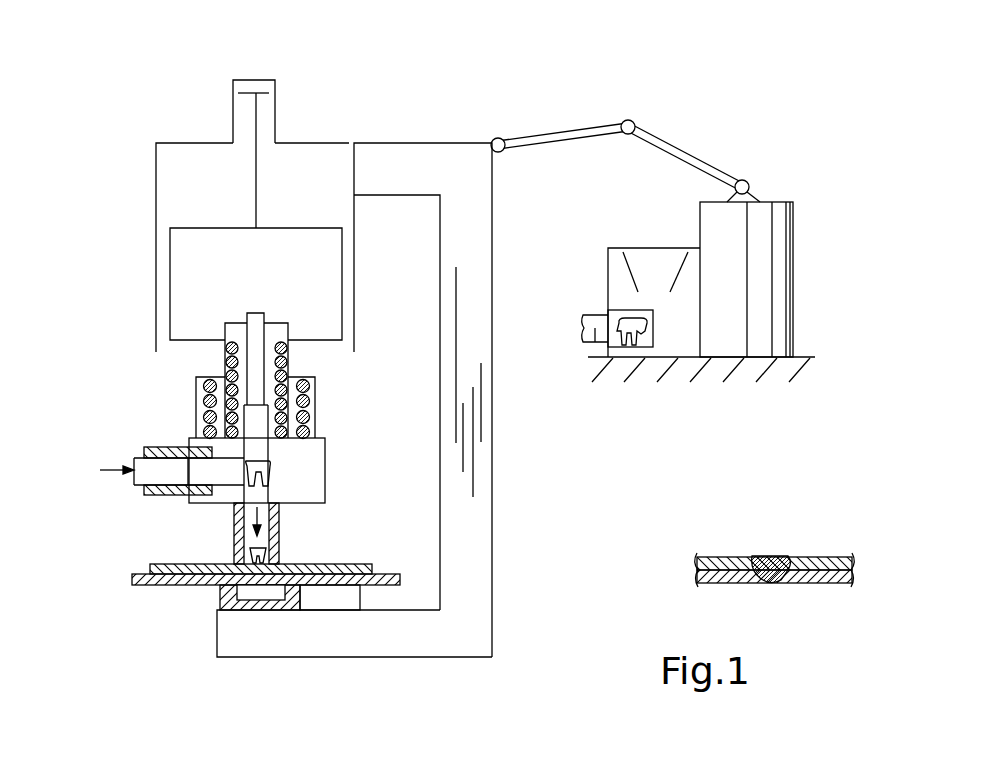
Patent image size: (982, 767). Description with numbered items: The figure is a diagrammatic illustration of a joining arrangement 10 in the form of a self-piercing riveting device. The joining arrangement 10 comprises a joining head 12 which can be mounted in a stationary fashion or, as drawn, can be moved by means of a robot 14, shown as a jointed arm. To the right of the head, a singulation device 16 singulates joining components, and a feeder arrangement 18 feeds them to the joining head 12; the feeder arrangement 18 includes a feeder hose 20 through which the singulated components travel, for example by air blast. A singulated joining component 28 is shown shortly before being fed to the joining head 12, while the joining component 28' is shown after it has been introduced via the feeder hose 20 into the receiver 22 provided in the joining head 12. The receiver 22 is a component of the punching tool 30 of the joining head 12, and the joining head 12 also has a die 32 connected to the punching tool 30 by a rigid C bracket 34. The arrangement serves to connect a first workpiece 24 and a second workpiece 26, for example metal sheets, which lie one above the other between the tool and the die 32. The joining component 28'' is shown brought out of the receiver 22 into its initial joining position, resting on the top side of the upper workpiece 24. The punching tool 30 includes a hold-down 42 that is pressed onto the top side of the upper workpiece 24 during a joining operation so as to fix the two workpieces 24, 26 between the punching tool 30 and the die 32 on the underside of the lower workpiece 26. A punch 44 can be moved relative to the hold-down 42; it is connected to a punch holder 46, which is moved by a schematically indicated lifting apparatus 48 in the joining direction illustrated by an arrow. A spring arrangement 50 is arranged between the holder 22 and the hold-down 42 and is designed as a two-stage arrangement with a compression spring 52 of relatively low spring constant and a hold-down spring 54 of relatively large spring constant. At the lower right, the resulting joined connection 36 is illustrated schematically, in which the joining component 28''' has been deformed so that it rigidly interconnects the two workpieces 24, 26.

The joining arrangement 10 is at (720, 104).
The joining head 12 is at (459, 136).
The robot 14 is at (785, 192).
The singulation device 16 is at (648, 248).
The feeder arrangement 18 is at (655, 330).
The feeder hose 20 is at (140, 449).
The receiver 22 is at (325, 488).
The first workpiece 24 is at (352, 565).
The second workpiece 26 is at (353, 588).
The joining component 28 is at (655, 385).
The joining component in receiver 28' is at (405, 462).
The joining component in initial joining position 28'' is at (320, 534).
The deformed joining component 28''' is at (772, 535).
The punching tool 30 is at (307, 143).
The die 32 is at (226, 590).
The C bracket 34 is at (483, 621).
The joined connection 36 is at (802, 538).
The hold-down 42 is at (233, 543).
The punch 44 is at (257, 362).
The punch holder 46 is at (208, 253).
The lifting apparatus 48 is at (233, 100).
The spring arrangement 50 is at (176, 396).
The compression spring 52 is at (288, 358).
The hold-down spring 54 is at (315, 403).